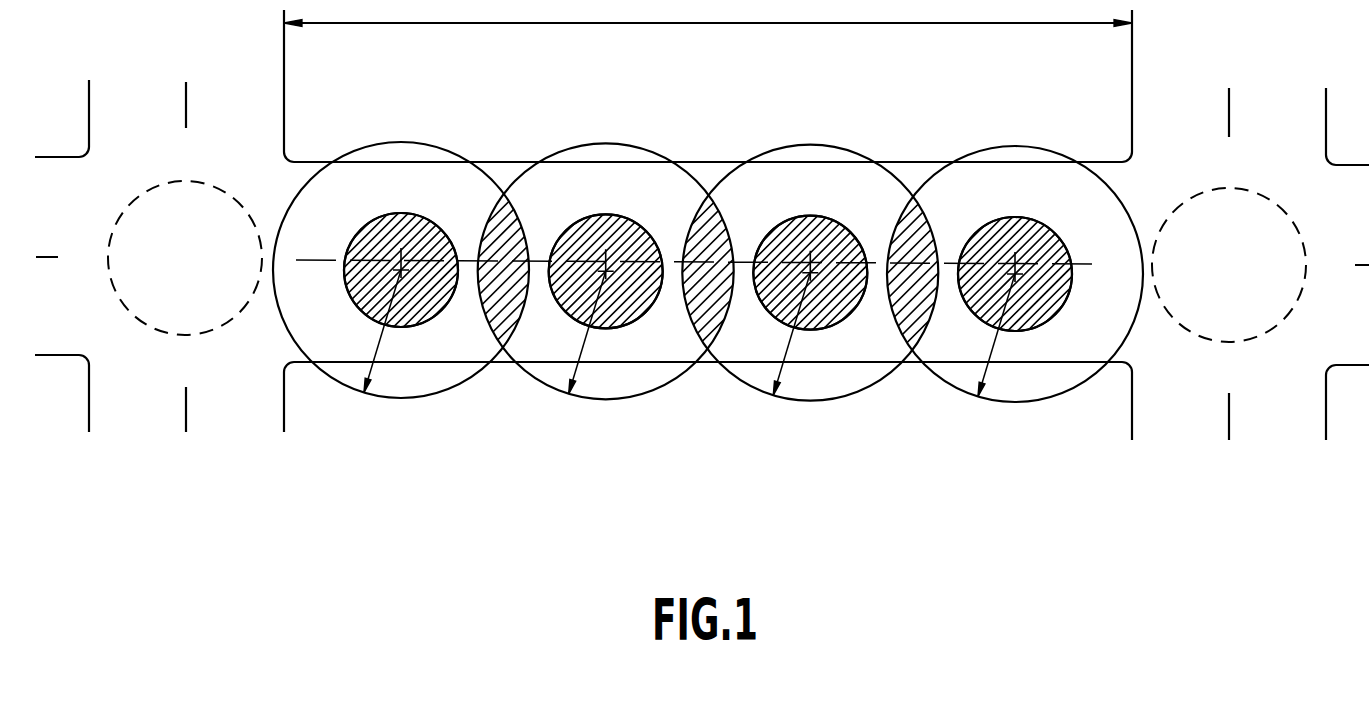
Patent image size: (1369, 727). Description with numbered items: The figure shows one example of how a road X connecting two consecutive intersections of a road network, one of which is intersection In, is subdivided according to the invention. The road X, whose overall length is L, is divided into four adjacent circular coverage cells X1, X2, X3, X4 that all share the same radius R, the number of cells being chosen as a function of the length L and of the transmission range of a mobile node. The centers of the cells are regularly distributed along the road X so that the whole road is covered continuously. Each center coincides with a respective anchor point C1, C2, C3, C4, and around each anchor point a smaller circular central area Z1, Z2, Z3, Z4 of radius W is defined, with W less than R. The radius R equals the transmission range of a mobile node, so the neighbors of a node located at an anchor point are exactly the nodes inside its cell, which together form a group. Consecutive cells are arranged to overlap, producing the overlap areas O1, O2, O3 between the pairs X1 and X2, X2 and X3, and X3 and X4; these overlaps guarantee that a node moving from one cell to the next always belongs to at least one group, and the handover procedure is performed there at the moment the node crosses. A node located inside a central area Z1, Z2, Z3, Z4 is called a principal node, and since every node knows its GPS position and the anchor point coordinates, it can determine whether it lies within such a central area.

The length of the road L is at (708, 13).
The intersection In is at (203, 278).
The coverage cell X1 is at (401, 297).
The coverage cell X2 is at (606, 298).
The coverage cell X3 is at (810, 300).
The coverage cell X4 is at (1015, 301).
The road X is at (705, 366).
The central area Z1 is at (400, 269).
The central area Z2 is at (605, 271).
The central area Z3 is at (810, 272).
The central area Z4 is at (1014, 273).
The anchor point C1 is at (399, 248).
The anchor point C2 is at (604, 249).
The anchor point C3 is at (808, 251).
The anchor point C4 is at (1013, 252).
The overlap area O1 is at (503, 270).
The overlap area O2 is at (708, 271).
The overlap area O3 is at (913, 272).
The radius of the coverage cells R is at (680, 333).
The radius of the central area W is at (722, 276).